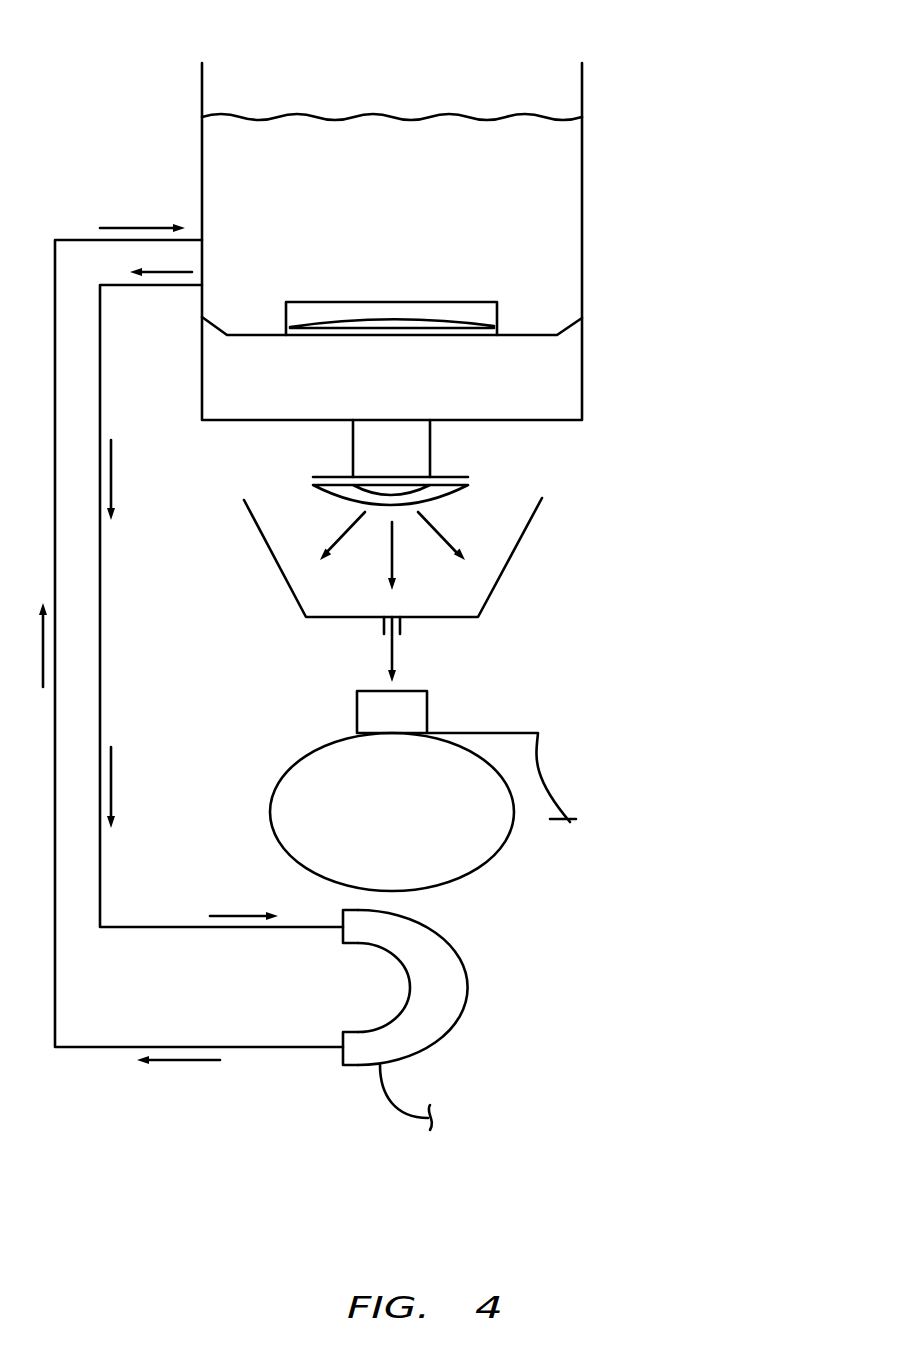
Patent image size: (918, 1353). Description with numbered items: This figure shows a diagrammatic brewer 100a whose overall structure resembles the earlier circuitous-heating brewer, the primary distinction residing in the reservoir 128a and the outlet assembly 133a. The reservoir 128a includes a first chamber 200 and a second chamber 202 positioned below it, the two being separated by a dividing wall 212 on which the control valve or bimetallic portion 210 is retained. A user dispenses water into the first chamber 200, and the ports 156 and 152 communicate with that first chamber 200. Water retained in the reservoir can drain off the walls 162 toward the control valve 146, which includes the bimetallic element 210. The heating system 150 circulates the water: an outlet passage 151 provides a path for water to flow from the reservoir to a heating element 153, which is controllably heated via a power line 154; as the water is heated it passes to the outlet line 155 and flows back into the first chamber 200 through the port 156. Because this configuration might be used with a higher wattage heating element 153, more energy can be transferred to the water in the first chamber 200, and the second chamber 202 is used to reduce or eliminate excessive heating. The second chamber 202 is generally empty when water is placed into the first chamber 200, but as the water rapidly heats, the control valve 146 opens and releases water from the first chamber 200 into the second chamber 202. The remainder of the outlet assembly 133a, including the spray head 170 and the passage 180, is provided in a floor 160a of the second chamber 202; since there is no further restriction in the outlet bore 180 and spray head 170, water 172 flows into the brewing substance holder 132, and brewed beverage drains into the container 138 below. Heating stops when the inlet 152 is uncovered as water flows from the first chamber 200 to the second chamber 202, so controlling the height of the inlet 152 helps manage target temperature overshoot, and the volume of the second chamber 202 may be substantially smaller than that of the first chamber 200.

The brewer 100a is at (669, 80).
The first chamber 200 is at (550, 194).
The walls 162 is at (582, 283).
The reservoir 128a is at (599, 293).
The floor 160a is at (535, 420).
The bimetallic element 210 is at (392, 303).
The control valve 146 is at (502, 320).
The second chamber 202 is at (537, 370).
The port 156 is at (202, 238).
The port 152 is at (200, 287).
The dividing wall 212 is at (258, 336).
The passage 180 is at (435, 462).
The outlet assembly 133a is at (607, 428).
The spray head 170 is at (508, 487).
The water 172 is at (478, 520).
The brewing substance holder 132 is at (540, 577).
The container 138 is at (575, 782).
The outlet passage 151 is at (100, 642).
The heating system 150 is at (491, 980).
The heating element 153 is at (432, 1020).
The power line 154 is at (383, 1103).
The outlet line 155 is at (103, 1047).